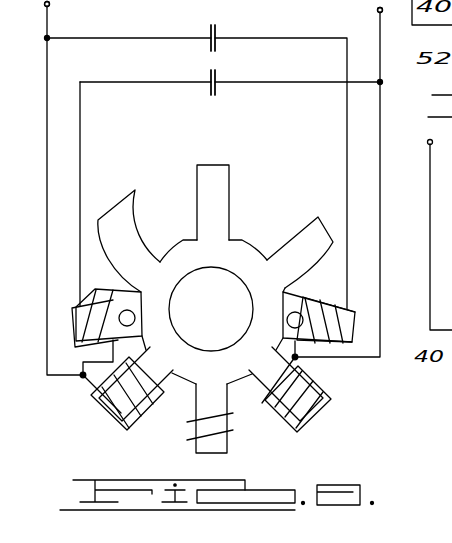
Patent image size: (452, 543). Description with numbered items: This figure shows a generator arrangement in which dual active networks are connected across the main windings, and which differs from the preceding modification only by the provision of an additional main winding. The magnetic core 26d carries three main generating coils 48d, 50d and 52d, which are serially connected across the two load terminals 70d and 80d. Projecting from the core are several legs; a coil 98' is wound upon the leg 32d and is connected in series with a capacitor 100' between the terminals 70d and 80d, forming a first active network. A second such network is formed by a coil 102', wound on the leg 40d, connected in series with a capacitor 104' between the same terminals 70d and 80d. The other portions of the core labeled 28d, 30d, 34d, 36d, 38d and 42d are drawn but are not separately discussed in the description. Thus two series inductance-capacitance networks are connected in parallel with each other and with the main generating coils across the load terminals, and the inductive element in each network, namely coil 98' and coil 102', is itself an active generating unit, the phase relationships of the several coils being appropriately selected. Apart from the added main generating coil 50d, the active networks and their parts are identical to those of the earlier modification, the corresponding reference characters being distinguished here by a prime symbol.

The core 26d is at (166, 324).
The pole tooth 28d is at (232, 173).
The pole tooth 30d is at (322, 218).
The leg 32d is at (346, 320).
The pole tooth 34d is at (318, 406).
The pole tooth 36d is at (210, 448).
The pole tooth 38d is at (116, 421).
The hooked pole tooth 42d is at (112, 203).
The leg 40d is at (68, 389).
The main generating coil 48d is at (301, 373).
The main generating coil 50d is at (232, 414).
The main generating coil 52d is at (123, 412).
The coil 98' is at (353, 306).
The coil 102' is at (123, 306).
The capacitor 100' is at (252, 31).
The capacitor 104' is at (252, 73).
The load terminal 70d is at (377, 10).
The load terminal 80d is at (50, 4).